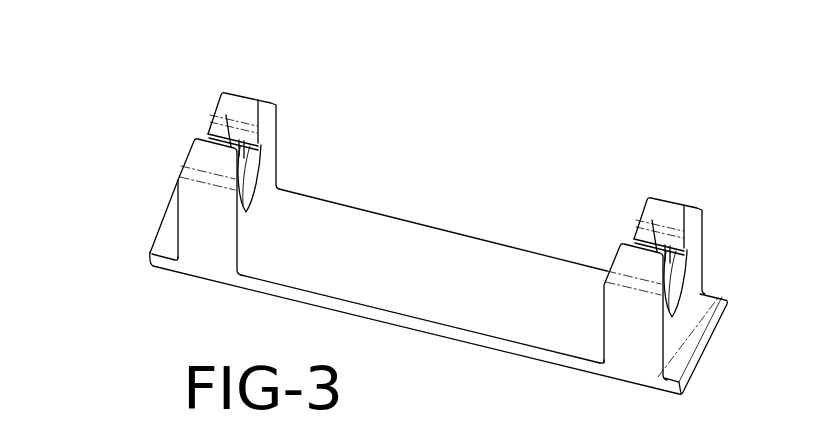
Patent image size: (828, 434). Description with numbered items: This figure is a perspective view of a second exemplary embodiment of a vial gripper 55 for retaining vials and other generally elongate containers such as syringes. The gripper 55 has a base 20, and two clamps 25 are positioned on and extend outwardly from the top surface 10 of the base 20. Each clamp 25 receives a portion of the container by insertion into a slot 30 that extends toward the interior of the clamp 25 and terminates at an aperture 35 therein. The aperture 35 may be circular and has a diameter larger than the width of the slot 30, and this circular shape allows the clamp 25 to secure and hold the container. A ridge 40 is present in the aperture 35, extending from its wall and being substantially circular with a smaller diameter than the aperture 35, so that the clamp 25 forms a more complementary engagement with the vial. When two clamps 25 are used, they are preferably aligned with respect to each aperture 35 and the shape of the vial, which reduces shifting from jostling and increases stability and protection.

The top surface 10 is at (430, 286).
The base 20 is at (475, 335).
The slot 30 is at (193, 124).
The clamp 25 is at (268, 132).
The aperture 35 is at (255, 181).
The ridge 40 is at (231, 147).
The gripper 55 is at (88, 110).